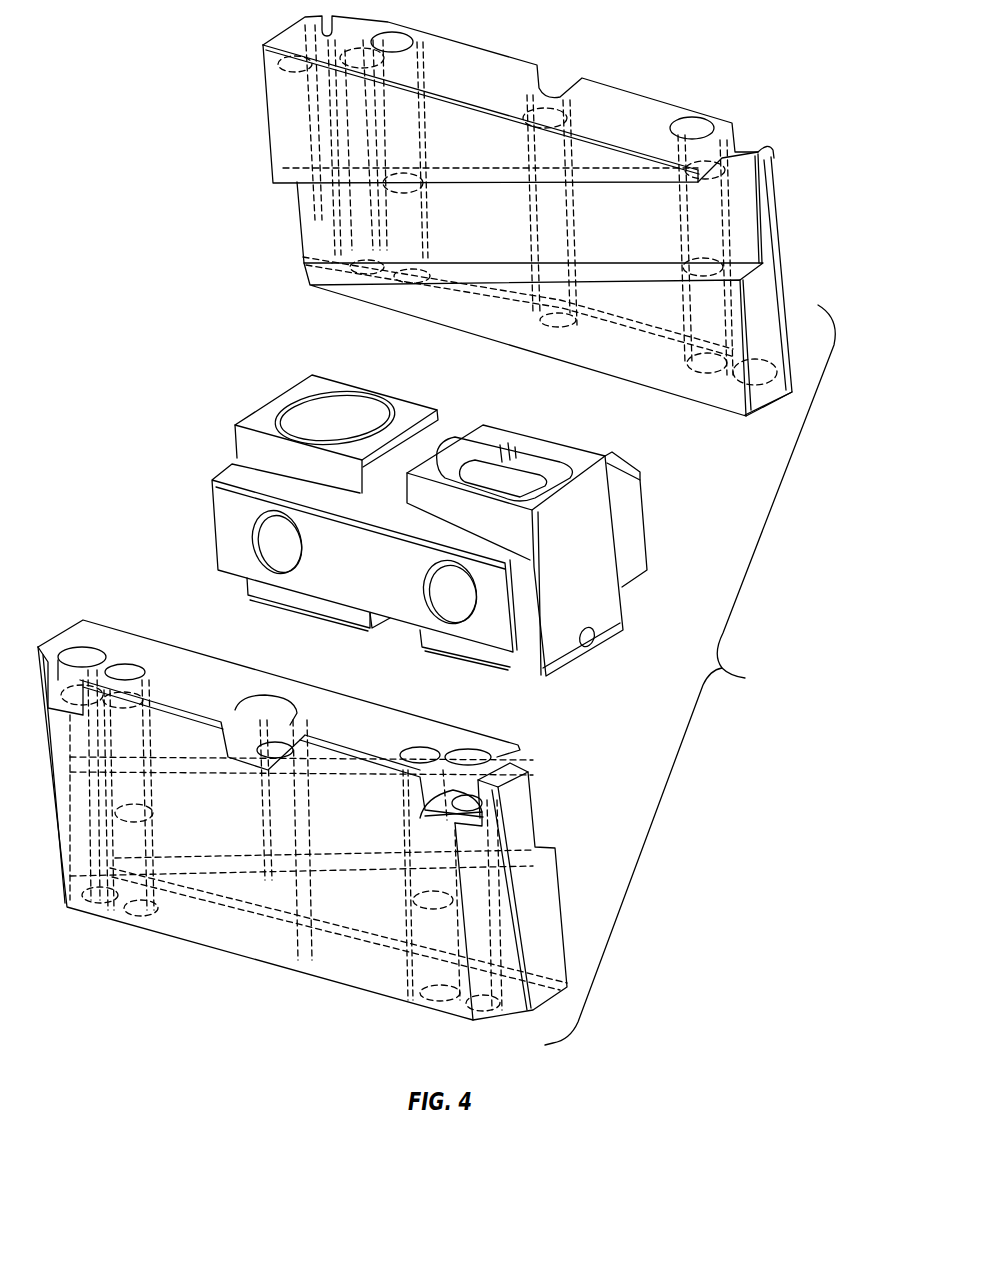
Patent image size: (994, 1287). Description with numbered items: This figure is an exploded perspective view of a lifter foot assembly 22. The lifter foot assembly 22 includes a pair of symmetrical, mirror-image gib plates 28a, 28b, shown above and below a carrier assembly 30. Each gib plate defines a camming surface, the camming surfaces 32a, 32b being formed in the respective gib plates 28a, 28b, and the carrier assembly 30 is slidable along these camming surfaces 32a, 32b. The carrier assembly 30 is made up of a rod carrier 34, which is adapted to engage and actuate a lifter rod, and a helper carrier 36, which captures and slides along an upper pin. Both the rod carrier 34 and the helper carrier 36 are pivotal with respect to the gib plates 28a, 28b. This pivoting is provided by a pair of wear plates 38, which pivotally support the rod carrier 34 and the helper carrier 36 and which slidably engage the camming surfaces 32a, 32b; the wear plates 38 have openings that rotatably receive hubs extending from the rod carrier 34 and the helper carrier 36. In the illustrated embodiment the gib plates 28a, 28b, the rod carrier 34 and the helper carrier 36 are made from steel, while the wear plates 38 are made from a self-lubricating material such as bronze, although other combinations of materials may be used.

The lifter foot assembly 22 is at (690, 675).
The gib plate 28a is at (560, 855).
The gib plate 28b is at (778, 207).
The carrier assembly 30 is at (212, 522).
The camming surface 32a is at (543, 840).
The camming surface 32b is at (499, 231).
The rod carrier 34 is at (624, 609).
The helper carrier 36 is at (278, 394).
The wear plate 38 is at (648, 518).